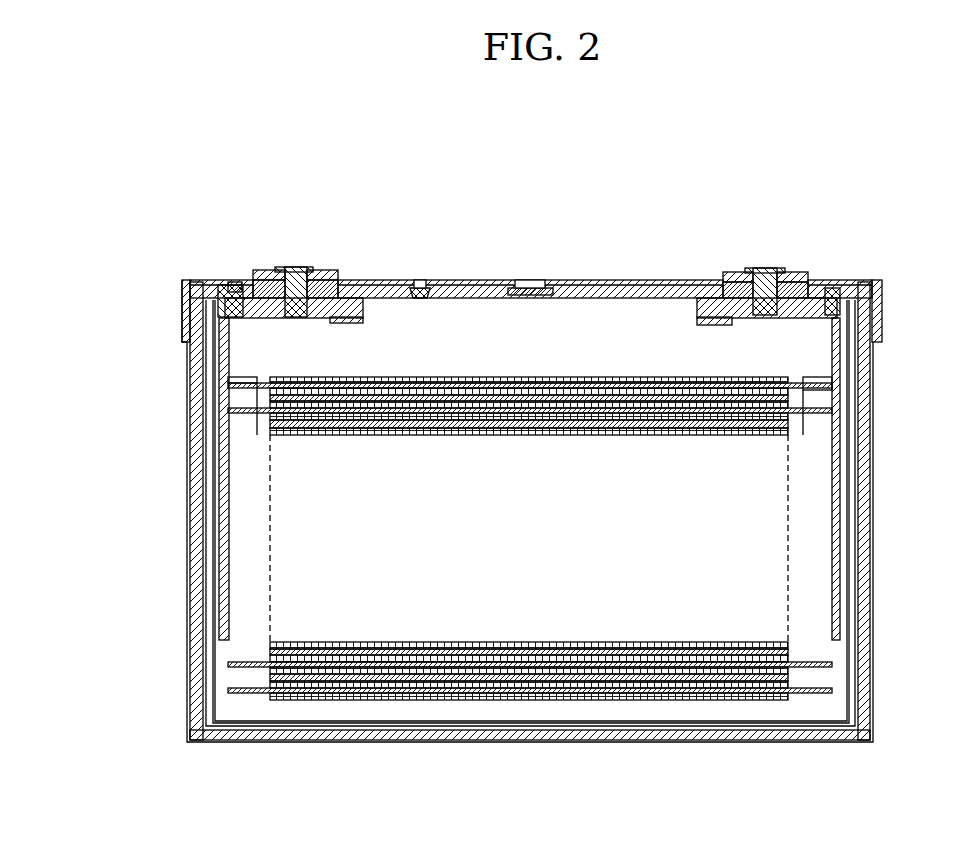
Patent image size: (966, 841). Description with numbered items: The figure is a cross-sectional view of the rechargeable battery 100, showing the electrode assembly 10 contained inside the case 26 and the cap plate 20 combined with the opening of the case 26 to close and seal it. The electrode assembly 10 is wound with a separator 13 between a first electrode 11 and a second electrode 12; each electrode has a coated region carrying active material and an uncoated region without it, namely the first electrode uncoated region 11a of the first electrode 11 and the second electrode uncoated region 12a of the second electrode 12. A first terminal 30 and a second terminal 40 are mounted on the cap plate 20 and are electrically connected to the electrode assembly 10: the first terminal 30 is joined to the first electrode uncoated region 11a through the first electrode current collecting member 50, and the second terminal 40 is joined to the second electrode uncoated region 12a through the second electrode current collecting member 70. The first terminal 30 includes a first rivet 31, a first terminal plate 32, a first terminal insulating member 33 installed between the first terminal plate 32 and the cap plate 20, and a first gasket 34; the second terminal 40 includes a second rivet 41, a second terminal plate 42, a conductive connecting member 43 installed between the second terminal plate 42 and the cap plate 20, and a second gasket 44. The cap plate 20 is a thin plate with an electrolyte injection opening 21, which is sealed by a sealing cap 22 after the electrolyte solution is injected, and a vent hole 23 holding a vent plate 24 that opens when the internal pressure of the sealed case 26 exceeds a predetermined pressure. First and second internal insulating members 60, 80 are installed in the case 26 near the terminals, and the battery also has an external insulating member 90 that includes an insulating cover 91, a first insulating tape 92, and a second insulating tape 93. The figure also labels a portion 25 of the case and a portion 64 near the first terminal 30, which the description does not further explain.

The rechargeable battery 100 is at (588, 158).
The electrode assembly 10 is at (529, 593).
The first electrode 11 is at (322, 700).
The first electrode uncoated region 11a is at (240, 668).
The second electrode 12 is at (402, 700).
The second electrode uncoated region 12a is at (805, 694).
The separator 13 is at (533, 671).
The cap plate 20 is at (608, 271).
The electrolyte injection opening 21 is at (420, 298).
The sealing cap 22 is at (418, 288).
The vent hole 23 is at (522, 295).
The vent plate 24 is at (526, 288).
The case flange 25 is at (182, 292).
The case 26 is at (860, 594).
The first terminal 30 is at (294, 247).
The first rivet 31 is at (299, 265).
The first terminal plate 32 is at (268, 271).
The first terminal insulating member 33 is at (234, 282).
The first gasket 34 is at (335, 271).
The second terminal 40 is at (767, 248).
The second rivet 41 is at (764, 264).
The second terminal plate 42 is at (800, 273).
The conductive connecting member 43 is at (838, 285).
The second gasket 44 is at (728, 273).
The first electrode current collecting member 50 is at (212, 530).
The first internal insulating member 60 is at (210, 312).
The fastening portion 64 is at (233, 282).
The second electrode current collecting member 70 is at (848, 520).
The second internal insulating member 80 is at (853, 306).
The external insulating member 90 is at (447, 513).
The insulating cover 91 is at (184, 330).
The first insulating tape 92 is at (207, 446).
The second insulating tape 93 is at (193, 403).